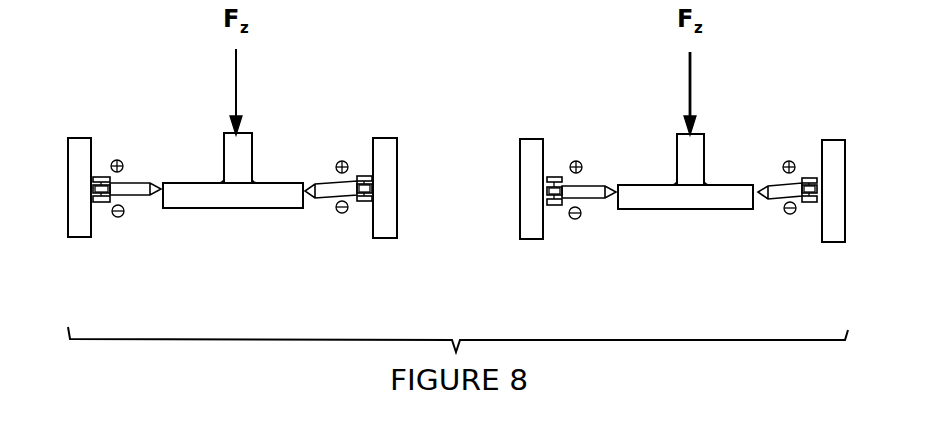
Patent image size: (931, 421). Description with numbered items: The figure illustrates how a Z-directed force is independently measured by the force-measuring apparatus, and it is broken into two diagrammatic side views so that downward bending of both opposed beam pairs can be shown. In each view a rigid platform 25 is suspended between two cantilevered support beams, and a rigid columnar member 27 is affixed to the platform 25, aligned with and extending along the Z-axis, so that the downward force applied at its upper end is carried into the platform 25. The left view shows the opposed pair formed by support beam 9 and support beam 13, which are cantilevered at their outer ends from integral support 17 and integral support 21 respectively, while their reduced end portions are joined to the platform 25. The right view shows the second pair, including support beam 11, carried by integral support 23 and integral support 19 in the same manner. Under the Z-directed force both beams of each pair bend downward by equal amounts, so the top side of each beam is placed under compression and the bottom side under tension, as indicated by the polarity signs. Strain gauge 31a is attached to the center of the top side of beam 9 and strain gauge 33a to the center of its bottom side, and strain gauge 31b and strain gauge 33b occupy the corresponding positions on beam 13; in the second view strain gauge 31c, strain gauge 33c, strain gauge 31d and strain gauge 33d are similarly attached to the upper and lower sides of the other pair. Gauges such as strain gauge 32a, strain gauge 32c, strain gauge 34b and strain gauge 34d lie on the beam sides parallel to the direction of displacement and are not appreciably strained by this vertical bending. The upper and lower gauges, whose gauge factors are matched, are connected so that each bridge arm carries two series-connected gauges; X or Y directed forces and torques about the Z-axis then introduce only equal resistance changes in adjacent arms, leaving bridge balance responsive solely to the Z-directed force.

The support beam 9 is at (135, 213).
The support beam 11 is at (777, 200).
The support beam 13 is at (328, 200).
The integral support 17 is at (80, 230).
The integral support 19 is at (835, 232).
The integral support 21 is at (387, 232).
The integral support 23 is at (533, 230).
The rigid platform 25 is at (233, 208).
The rigid columnar member 27 is at (253, 135).
The strain gauge 31a is at (98, 177).
The strain gauge 31b is at (360, 175).
The strain gauge 31c is at (552, 177).
The strain gauge 31d is at (808, 178).
The strain gauge 32a is at (97, 188).
The strain gauge 32c is at (549, 189).
The strain gauge 33a is at (104, 202).
The strain gauge 33b is at (368, 200).
The strain gauge 33c is at (555, 205).
The strain gauge 33d is at (812, 202).
The strain gauge 34b is at (372, 188).
The strain gauge 34d is at (816, 188).